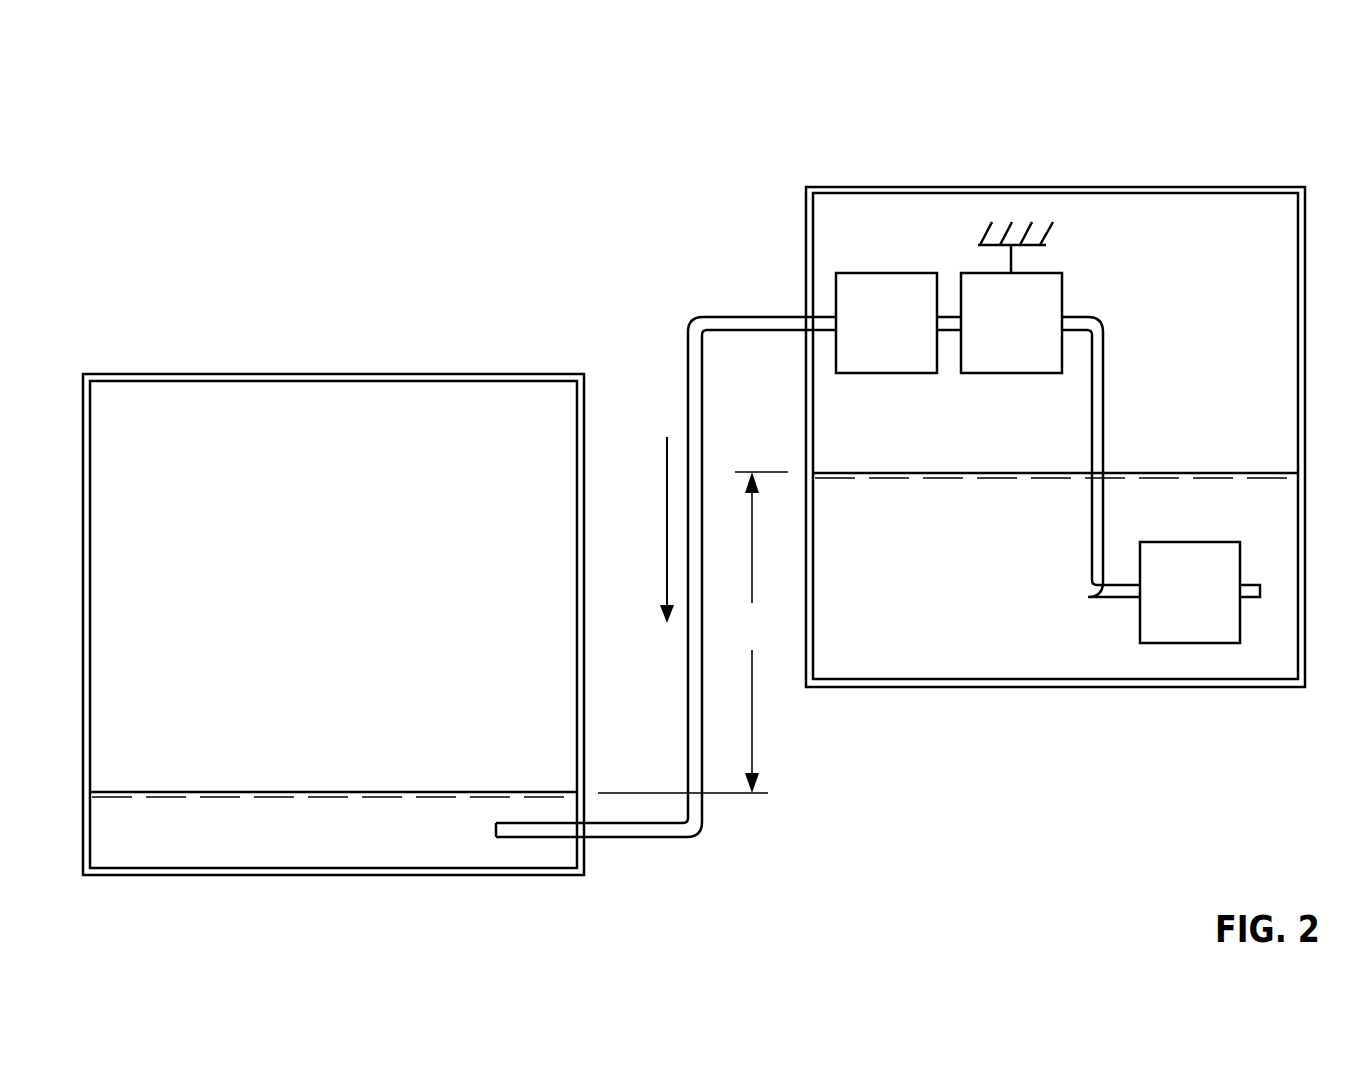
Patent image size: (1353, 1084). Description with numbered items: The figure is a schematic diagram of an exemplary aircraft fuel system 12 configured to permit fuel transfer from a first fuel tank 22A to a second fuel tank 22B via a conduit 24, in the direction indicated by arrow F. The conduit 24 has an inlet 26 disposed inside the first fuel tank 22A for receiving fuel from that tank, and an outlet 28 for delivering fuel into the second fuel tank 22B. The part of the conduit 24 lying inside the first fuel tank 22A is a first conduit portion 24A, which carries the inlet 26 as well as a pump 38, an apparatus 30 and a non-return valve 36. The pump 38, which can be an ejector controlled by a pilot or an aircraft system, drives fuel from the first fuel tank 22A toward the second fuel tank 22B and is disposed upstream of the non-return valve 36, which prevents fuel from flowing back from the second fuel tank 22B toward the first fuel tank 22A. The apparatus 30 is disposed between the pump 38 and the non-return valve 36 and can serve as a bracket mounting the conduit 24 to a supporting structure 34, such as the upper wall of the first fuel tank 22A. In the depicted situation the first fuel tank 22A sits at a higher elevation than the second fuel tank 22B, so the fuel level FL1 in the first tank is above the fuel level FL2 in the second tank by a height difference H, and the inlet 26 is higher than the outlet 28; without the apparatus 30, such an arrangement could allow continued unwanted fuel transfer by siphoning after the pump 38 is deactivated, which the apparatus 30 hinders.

The fuel system 12 is at (500, 100).
The first fuel tank 22A is at (1132, 187).
The second fuel tank 22B is at (447, 374).
The conduit 24 is at (688, 398).
The first conduit portion 24A is at (1105, 350).
The inlet 26 is at (1250, 598).
The outlet 28 is at (510, 837).
The apparatus 30 is at (1029, 338).
The supporting structure 34 is at (987, 225).
The non-return valve 36 is at (904, 338).
The pump 38 is at (1207, 607).
The fuel level FL1 is at (1260, 473).
The fuel level FL2 is at (527, 792).
The arrow F is at (665, 522).
The height difference H is at (693, 632).